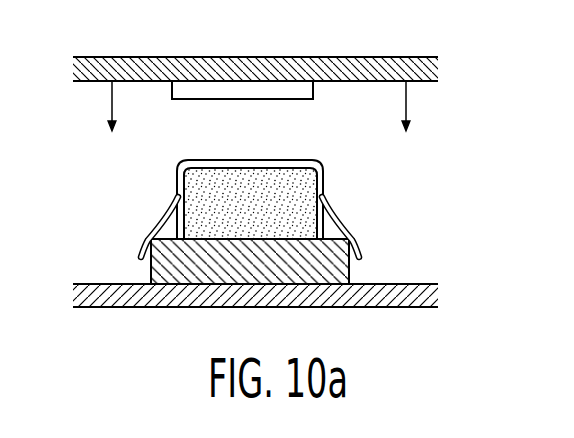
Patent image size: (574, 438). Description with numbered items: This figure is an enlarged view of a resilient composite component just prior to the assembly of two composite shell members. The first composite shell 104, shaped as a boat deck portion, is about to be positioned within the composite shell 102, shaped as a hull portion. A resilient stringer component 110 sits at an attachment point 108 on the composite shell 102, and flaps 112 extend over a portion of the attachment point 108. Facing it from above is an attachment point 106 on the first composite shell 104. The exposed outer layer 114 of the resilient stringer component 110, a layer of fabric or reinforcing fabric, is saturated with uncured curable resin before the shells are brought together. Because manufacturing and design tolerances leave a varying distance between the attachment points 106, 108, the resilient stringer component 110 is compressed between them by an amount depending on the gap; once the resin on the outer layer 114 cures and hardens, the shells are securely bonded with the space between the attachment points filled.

The composite shell 102 is at (368, 300).
The first composite shell 104 is at (357, 57).
The attachment point 106 is at (223, 99).
The attachment point 108 is at (350, 268).
The resilient stringer component 110 is at (292, 183).
The flap 112 is at (140, 241).
The outer layer 114 is at (282, 160).